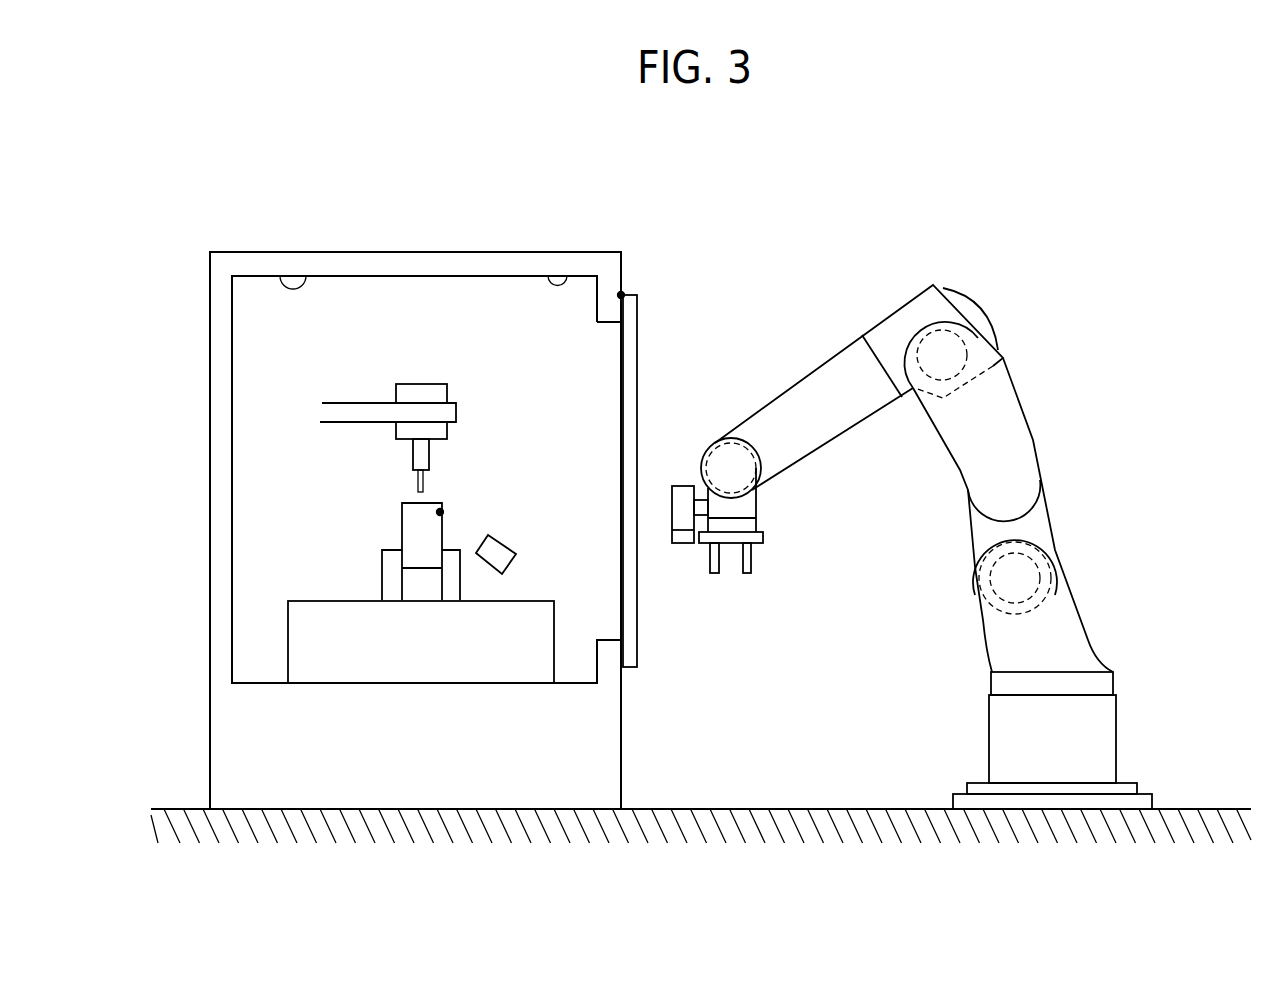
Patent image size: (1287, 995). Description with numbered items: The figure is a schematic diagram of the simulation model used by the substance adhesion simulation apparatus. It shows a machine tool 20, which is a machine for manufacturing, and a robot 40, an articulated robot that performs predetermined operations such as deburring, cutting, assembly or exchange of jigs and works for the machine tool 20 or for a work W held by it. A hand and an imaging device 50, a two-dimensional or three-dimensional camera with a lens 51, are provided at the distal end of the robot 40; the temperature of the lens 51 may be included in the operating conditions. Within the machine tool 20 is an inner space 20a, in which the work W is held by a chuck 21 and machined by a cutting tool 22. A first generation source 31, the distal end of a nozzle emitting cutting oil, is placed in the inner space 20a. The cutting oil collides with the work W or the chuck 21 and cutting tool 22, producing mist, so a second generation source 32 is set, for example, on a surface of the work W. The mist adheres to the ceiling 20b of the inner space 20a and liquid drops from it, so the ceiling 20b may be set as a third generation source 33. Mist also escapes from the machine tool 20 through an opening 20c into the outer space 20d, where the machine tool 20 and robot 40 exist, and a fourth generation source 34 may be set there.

The machine tool 20 is at (360, 252).
The inner space 20a is at (464, 306).
The ceiling 20b is at (567, 276).
The opening 20c is at (610, 323).
The outer space 20d is at (745, 282).
The chuck 21 is at (382, 567).
The cutting tool 22 is at (413, 453).
The first generation source 31 is at (488, 535).
The second generation source 32 is at (440, 512).
The third generation source 33 is at (305, 276).
The fourth generation source 34 is at (621, 295).
The robot 40 is at (1042, 458).
The imaging device 50 is at (683, 486).
The lens 51 is at (683, 543).
The work W is at (402, 520).